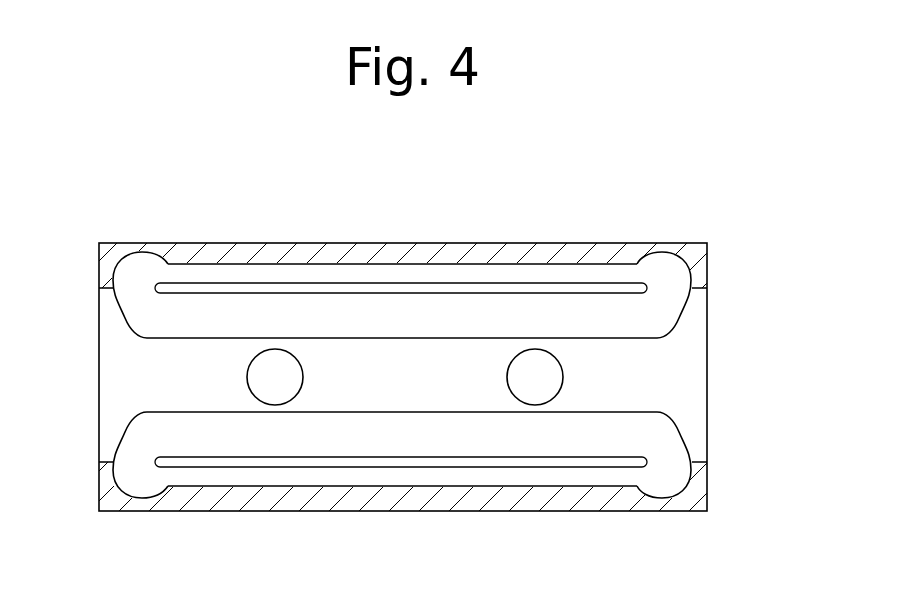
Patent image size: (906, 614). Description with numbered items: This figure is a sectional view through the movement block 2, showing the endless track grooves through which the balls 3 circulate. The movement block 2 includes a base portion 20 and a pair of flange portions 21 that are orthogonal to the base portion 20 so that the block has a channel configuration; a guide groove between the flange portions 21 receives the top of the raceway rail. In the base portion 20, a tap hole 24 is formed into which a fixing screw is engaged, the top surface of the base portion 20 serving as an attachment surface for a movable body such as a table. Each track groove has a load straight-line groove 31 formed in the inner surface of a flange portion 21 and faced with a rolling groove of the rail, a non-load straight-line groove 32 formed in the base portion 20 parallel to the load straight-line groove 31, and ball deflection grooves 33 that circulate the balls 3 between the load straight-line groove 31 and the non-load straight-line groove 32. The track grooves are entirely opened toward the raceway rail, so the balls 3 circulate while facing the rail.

The movement block 2 is at (733, 243).
The balls 3 is at (132, 417).
The base portion 20 is at (690, 380).
The flange portions 21 is at (590, 248).
The tap hole 24 is at (298, 384).
The load straight-line groove 31 is at (485, 266).
The non-load straight-line groove 32 is at (390, 310).
The ball deflection groove 33 is at (140, 253).